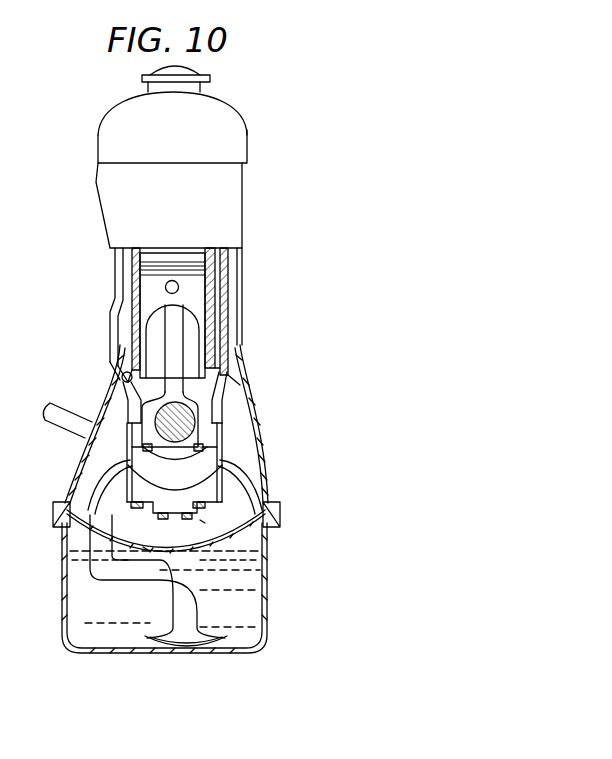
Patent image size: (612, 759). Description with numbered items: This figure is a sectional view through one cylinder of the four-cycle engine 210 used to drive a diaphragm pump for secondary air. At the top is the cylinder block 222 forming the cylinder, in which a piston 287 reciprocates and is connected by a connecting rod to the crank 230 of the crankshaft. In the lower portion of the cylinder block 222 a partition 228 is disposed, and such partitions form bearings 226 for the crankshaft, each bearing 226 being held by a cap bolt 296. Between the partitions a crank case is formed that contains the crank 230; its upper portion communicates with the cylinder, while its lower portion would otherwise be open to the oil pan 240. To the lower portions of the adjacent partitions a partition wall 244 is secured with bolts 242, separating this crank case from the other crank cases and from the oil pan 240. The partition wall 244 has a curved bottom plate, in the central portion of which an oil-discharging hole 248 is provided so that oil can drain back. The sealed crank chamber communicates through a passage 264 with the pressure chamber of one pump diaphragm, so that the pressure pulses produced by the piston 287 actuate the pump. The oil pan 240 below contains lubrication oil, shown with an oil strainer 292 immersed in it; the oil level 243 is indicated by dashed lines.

The 4-cycle engine 210 is at (250, 128).
The cylinder block 222 is at (243, 275).
The piston 287 is at (152, 287).
The passage 264 is at (62, 407).
The partition 228 is at (243, 402).
The bearing 226 is at (213, 445).
The crank 230 is at (187, 465).
The cap bolt 296 is at (130, 507).
The partition wall 244 is at (242, 528).
The lubricating oil 243 is at (78, 572).
The bolt 242 is at (143, 547).
The oil-discharging hole 248 is at (172, 560).
The oil strainer 292 is at (187, 649).
The oil pan 240 is at (260, 648).